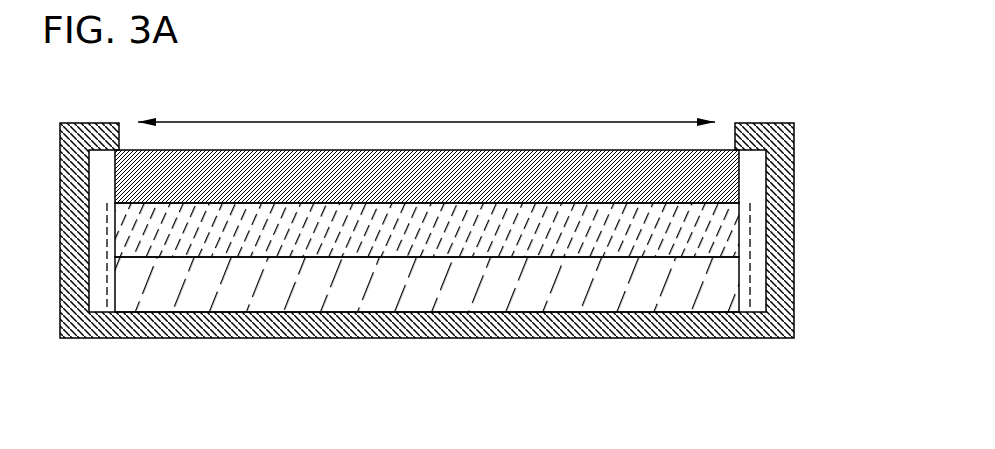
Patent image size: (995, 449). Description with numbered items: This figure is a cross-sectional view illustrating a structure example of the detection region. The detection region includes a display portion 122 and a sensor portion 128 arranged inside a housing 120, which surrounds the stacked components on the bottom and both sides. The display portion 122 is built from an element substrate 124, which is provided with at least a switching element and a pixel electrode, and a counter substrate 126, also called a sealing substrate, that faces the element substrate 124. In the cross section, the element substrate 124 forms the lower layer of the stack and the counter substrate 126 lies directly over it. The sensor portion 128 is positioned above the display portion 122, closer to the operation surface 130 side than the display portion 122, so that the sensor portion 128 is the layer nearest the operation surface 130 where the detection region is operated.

The housing 120 is at (343, 330).
The display portion 122 is at (750, 226).
The element substrate 124 is at (427, 284).
The counter substrate 126 is at (427, 230).
The sensor portion 128 is at (427, 176).
The operation surface 130 is at (430, 121).